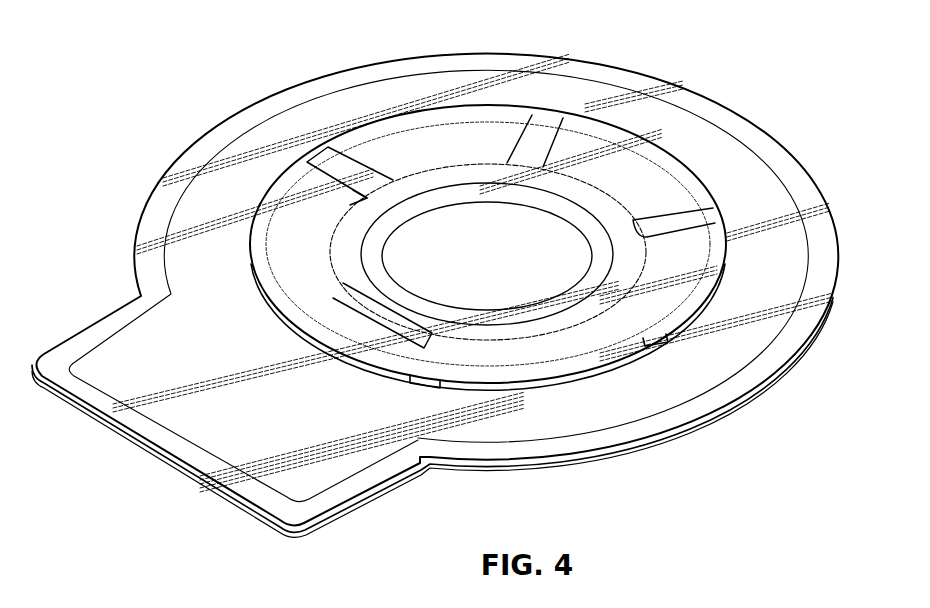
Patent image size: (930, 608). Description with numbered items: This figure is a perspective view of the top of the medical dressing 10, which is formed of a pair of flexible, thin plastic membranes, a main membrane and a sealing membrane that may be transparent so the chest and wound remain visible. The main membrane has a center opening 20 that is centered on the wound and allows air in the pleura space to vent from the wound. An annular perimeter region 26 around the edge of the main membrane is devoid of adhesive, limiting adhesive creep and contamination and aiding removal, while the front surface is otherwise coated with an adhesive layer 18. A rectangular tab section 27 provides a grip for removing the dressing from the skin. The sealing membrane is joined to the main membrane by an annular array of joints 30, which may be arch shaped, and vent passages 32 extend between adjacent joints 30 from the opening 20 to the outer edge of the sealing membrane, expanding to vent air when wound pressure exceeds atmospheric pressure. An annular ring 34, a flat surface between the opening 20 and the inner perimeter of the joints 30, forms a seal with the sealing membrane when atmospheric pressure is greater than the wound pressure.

The medical dressing 10 is at (133, 138).
The adhesive layer 18 is at (290, 118).
The center opening 20 is at (494, 262).
The annular perimeter region 26 is at (757, 140).
The rectangular tab section 27 is at (223, 432).
The joints 30 is at (416, 148).
The vent passages 32 is at (725, 223).
The annular ring 34 is at (352, 233).